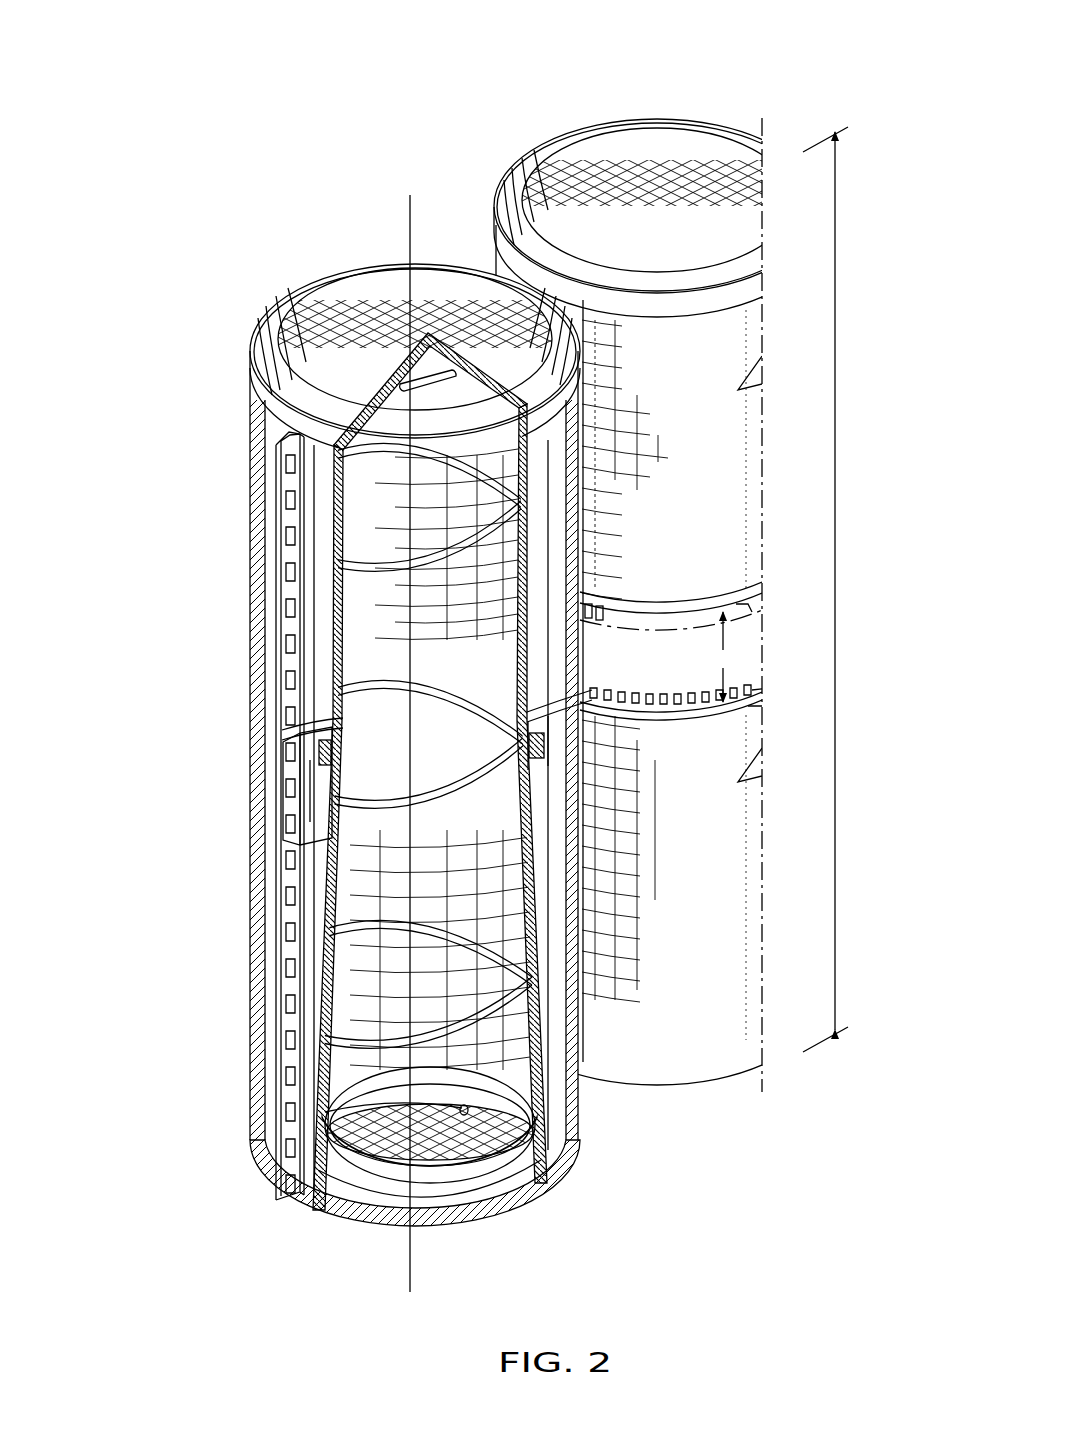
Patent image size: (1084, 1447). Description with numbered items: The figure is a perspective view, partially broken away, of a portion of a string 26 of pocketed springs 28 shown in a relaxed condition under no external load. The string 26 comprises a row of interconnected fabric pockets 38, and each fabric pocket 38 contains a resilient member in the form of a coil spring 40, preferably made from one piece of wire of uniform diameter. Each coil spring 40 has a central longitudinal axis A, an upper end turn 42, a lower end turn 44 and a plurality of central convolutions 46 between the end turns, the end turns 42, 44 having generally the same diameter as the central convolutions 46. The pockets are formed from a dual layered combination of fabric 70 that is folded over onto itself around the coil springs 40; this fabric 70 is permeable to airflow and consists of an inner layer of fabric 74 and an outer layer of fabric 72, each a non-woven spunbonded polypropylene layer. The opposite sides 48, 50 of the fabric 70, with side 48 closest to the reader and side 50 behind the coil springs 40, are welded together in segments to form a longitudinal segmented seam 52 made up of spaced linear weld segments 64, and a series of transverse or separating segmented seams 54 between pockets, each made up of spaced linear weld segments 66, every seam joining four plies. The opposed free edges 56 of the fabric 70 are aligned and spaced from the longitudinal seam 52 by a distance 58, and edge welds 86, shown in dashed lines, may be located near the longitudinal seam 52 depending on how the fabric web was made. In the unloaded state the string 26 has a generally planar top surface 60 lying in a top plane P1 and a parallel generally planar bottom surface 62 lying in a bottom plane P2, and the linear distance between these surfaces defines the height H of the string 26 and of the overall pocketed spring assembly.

The string of pocketed springs 26 is at (452, 74).
The pocketed spring 28 is at (526, 161).
The fabric pocket 38 is at (522, 192).
The coil spring 40 is at (440, 784).
The upper end turn 42 is at (456, 398).
The lower end turn 44 is at (508, 1192).
The central convolutions 46 is at (392, 700).
The side 48 is at (710, 962).
The side 50 is at (268, 945).
The longitudinal segmented seam 52 is at (692, 712).
The transverse segmented seam 54 is at (286, 581).
The opposed edges 56 is at (670, 604).
The distance 58 is at (721, 657).
The top surface 60 is at (668, 138).
The bottom surface 62 is at (678, 1084).
The linear weld segments 64 is at (762, 696).
The linear weld segments 66 is at (285, 541).
The dual layered combination of fabric 70 is at (249, 463).
The outer layer of fabric 72 is at (560, 1160).
The inner layer of fabric 74 is at (546, 1100).
The edge welds 86 is at (748, 606).
The longitudinal axis A is at (410, 203).
The height H is at (825, 589).
The top plane P1 is at (791, 124).
The bottom plane P2 is at (282, 1219).